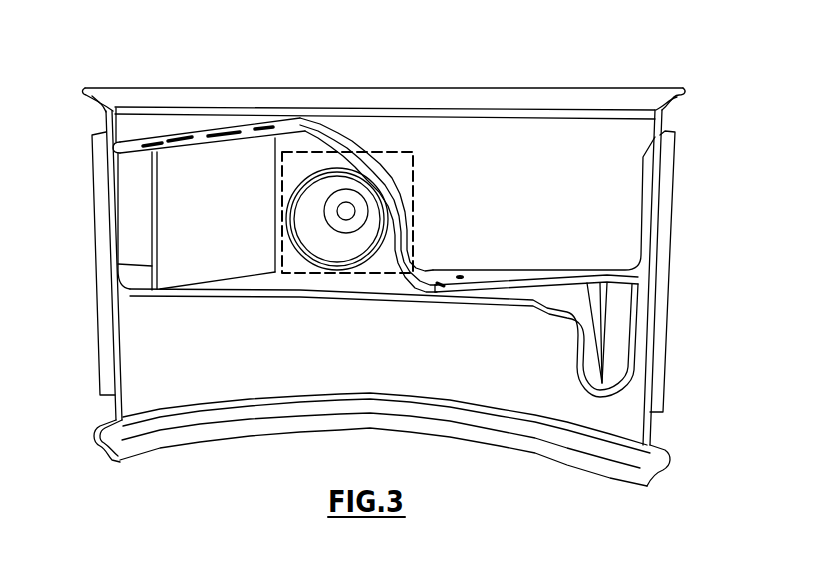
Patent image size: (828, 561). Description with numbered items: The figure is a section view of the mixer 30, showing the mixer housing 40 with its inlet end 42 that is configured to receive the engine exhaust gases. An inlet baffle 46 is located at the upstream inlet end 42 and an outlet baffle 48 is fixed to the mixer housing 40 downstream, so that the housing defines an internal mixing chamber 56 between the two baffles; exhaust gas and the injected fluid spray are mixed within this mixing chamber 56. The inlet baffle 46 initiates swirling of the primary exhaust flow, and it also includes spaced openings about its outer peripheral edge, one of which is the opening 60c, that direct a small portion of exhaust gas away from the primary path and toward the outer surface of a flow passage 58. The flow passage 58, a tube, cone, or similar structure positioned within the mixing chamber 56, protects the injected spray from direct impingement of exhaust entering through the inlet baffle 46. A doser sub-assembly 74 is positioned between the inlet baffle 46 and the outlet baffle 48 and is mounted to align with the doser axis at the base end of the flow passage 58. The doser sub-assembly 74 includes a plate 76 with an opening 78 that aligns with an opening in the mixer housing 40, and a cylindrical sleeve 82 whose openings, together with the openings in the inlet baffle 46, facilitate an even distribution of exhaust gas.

The mixer 30 is at (498, 418).
The mixer housing 40 is at (100, 284).
The inlet end 42 is at (577, 100).
The inlet baffle 46 is at (197, 135).
The outlet baffle 48 is at (333, 298).
The internal mixing chamber 56 is at (181, 192).
The flow passage 58 is at (327, 243).
The opening 60c is at (421, 234).
The doser sub-assembly 74 is at (274, 206).
The plate 76 is at (344, 210).
The opening 78 is at (342, 204).
The sleeve 82 is at (372, 258).